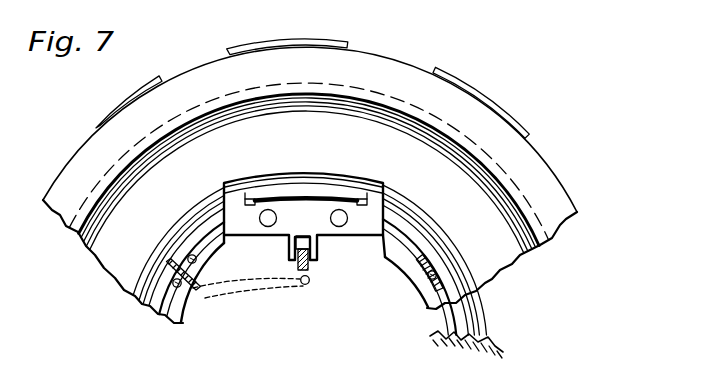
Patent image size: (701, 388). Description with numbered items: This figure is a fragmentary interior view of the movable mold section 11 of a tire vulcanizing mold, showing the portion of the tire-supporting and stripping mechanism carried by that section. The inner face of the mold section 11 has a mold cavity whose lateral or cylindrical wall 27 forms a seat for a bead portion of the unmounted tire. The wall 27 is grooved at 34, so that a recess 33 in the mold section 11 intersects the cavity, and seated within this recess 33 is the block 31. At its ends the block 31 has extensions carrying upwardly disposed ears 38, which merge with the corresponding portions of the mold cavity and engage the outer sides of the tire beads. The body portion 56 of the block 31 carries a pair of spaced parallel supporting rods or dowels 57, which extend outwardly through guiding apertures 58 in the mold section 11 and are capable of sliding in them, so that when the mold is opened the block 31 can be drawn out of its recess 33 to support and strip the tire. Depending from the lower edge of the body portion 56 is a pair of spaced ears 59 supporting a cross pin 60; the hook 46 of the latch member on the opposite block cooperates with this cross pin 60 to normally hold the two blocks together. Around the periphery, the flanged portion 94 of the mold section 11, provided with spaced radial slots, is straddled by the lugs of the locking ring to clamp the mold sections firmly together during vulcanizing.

The movable mold section 11 is at (513, 213).
The lateral or cylindrical walls 27 is at (417, 229).
The block 31 is at (357, 227).
The recess 33 is at (379, 247).
The grooved or slotted portion 34 is at (363, 193).
The upwardly disposed ears 38 is at (233, 198).
The hook 46 is at (308, 272).
The body portion 56 is at (290, 215).
The supporting rods or dowels 57 is at (268, 224).
The guiding apertures 58 is at (246, 197).
The spaced ears 59 is at (285, 280).
The cross pin 60 is at (307, 248).
The peripheral flanged portion 94 is at (497, 112).